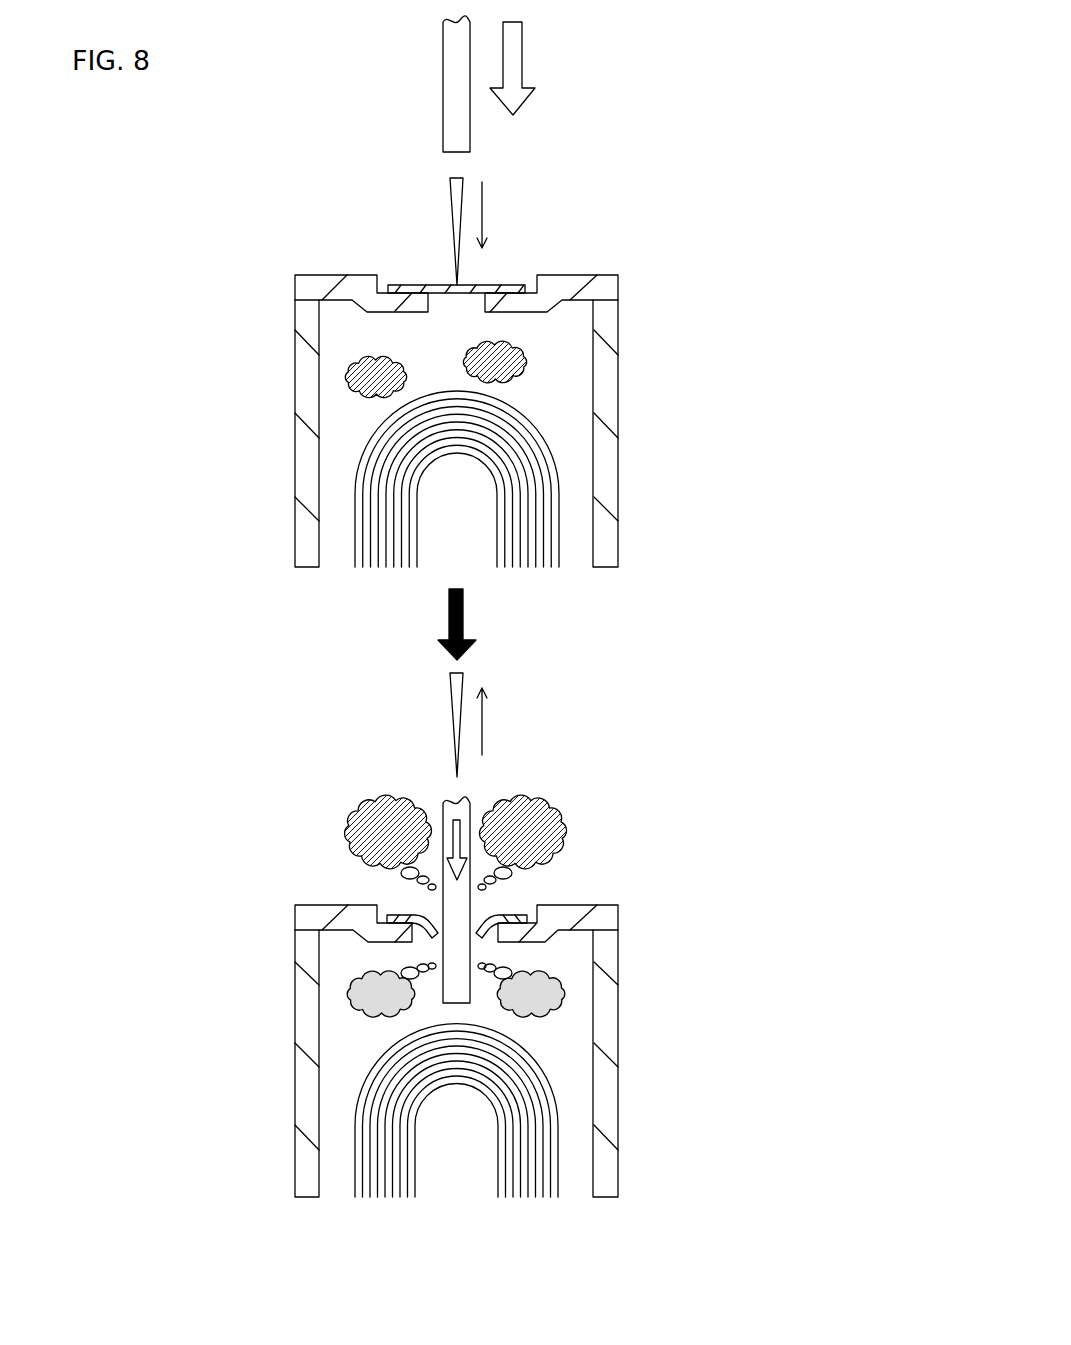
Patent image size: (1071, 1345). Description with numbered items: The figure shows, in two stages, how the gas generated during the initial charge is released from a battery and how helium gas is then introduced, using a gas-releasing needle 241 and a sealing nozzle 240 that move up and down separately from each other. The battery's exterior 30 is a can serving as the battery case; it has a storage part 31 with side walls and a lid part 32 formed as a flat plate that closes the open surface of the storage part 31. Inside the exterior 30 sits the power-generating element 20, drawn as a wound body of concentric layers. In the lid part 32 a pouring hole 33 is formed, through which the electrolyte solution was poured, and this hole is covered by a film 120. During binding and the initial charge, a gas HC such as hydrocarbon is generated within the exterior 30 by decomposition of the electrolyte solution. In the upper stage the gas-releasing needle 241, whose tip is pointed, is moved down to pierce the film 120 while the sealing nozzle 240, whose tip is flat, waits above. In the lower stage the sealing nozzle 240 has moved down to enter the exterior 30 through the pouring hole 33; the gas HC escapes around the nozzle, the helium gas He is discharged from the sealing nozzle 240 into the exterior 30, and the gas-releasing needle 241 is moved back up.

The power-generating element 20 is at (522, 422).
The exterior 30 is at (430, 736).
The storage part 31 is at (300, 467).
The lid part 32 is at (348, 290).
The pouring hole 33 is at (460, 302).
The film 120 is at (493, 283).
The sealing nozzle 240 is at (448, 65).
The gas-releasing needle 241 is at (455, 193).
The gas HC is at (348, 377).
The helium gas He is at (473, 832).